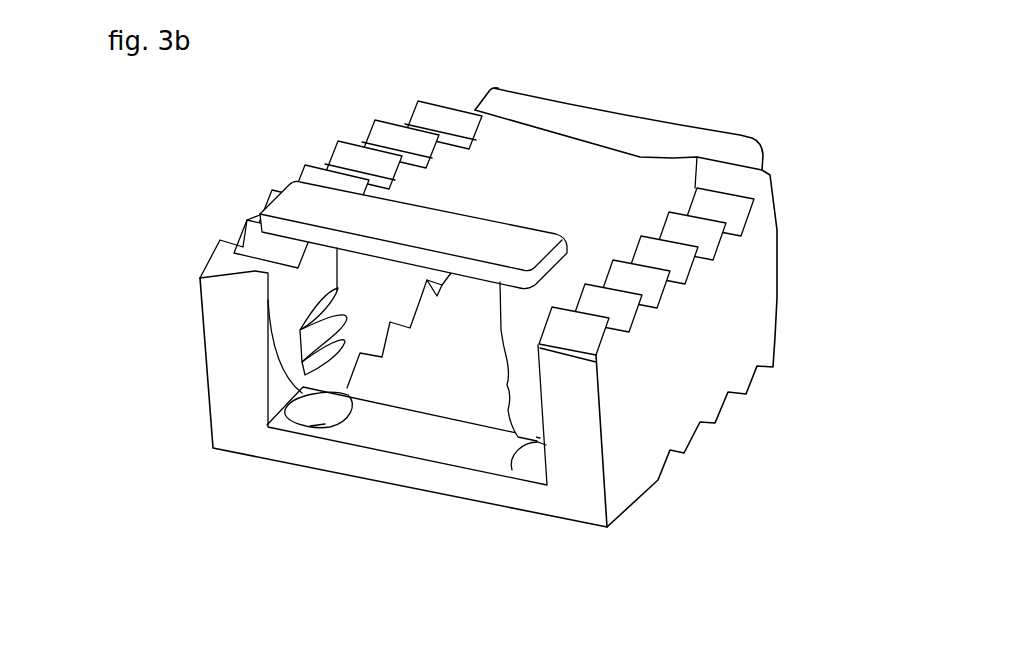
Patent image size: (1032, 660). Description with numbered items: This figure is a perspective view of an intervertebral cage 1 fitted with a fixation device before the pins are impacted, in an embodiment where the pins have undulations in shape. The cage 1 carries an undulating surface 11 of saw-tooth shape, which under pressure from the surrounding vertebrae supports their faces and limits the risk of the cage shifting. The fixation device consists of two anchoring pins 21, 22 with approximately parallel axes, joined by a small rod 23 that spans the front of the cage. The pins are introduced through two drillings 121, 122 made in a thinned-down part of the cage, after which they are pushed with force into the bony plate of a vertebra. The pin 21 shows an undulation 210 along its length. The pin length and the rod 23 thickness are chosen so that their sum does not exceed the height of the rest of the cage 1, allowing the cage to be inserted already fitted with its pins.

The intervertebral cage 1 is at (722, 297).
The undulating surface 11 is at (383, 135).
The anchoring pin 21 is at (280, 303).
The spring fingers 210 is at (330, 331).
The small rod 23 is at (350, 214).
The drilling 121 is at (305, 412).
The drilling 122 is at (528, 468).
The anchoring pin 22 is at (527, 367).